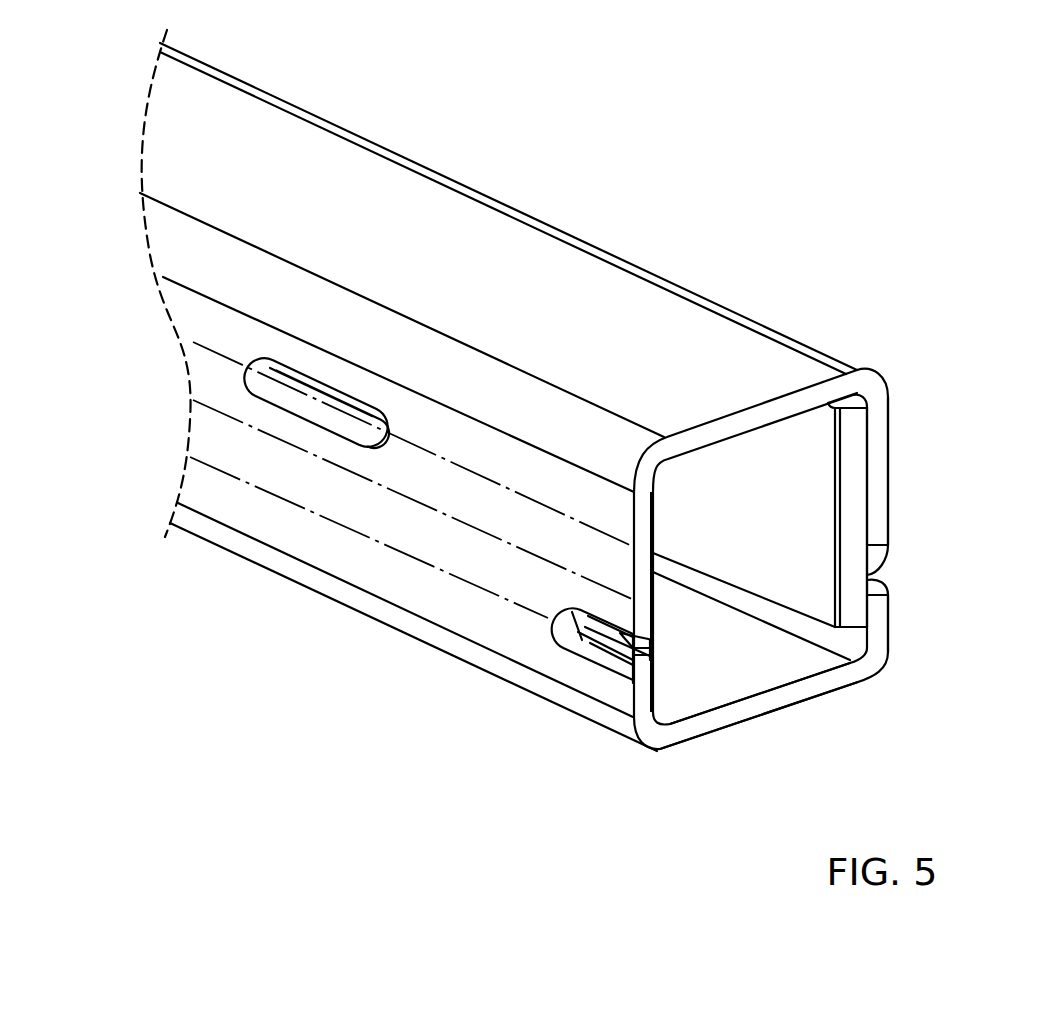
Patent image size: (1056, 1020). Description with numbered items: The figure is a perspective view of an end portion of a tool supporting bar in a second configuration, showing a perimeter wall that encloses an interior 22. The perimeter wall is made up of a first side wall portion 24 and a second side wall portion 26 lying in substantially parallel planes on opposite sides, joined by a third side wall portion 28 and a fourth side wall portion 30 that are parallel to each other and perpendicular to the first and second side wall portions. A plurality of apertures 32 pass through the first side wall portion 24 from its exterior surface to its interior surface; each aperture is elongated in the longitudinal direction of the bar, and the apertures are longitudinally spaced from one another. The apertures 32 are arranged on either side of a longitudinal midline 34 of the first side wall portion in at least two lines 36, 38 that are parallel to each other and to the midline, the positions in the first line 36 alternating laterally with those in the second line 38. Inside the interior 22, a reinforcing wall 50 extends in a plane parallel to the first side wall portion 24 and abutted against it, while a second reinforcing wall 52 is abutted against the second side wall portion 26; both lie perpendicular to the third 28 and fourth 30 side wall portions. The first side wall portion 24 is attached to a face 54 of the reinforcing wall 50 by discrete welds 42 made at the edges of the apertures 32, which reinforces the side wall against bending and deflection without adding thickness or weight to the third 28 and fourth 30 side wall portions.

The interior 22 is at (773, 642).
The first side wall portion 24 is at (640, 528).
The second side wall portion 26 is at (877, 468).
The third side wall portion 28 is at (748, 420).
The fourth side wall portion 30 is at (743, 705).
The apertures 32 is at (335, 390).
The longitudinal midline 34 is at (383, 485).
The first line of apertures 36 is at (210, 350).
The second line of apertures 38 is at (433, 572).
The welds 42 is at (595, 648).
The reinforcing wall 50 is at (634, 660).
The second reinforcing wall 52 is at (802, 590).
The face 54 is at (590, 625).